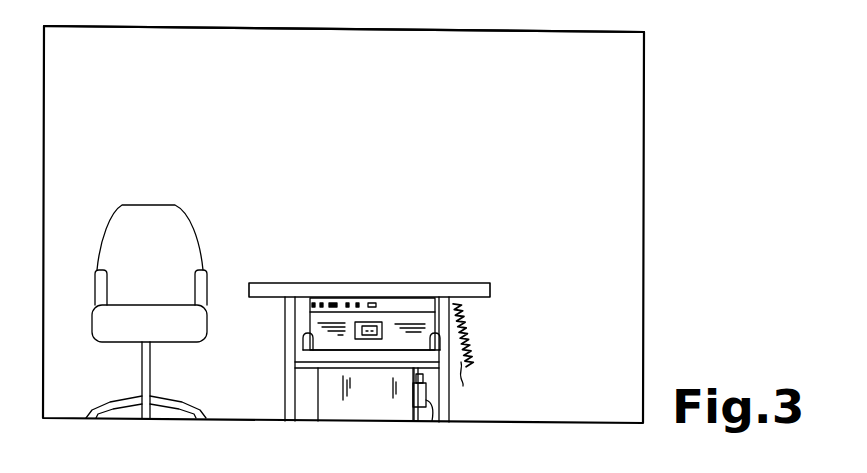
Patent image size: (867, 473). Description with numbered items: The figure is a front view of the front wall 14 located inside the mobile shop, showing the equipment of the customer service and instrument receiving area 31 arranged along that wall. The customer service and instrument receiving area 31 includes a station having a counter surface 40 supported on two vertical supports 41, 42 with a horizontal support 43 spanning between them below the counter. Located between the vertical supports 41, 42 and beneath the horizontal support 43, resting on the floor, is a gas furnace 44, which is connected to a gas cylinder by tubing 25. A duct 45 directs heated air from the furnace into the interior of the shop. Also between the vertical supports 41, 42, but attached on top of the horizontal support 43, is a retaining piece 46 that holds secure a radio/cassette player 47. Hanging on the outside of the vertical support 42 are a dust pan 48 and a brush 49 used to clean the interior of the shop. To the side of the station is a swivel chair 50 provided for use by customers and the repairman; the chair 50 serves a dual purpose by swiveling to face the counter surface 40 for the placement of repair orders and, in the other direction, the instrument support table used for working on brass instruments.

The front wall 14 is at (503, 60).
The customer service and instrument receiving area 31 is at (660, 32).
The swivel chair 50 is at (175, 212).
The counter surface 40 is at (445, 290).
The vertical support 41 is at (289, 412).
The vertical support 42 is at (453, 412).
The horizontal support 43 is at (300, 365).
The gas furnace 44 is at (350, 412).
The retaining piece 46 is at (305, 345).
The radio/cassette player 47 is at (338, 299).
The tubing 25 is at (409, 413).
The duct 45 is at (432, 421).
The dust pan 48 is at (473, 383).
The brush 49 is at (471, 362).